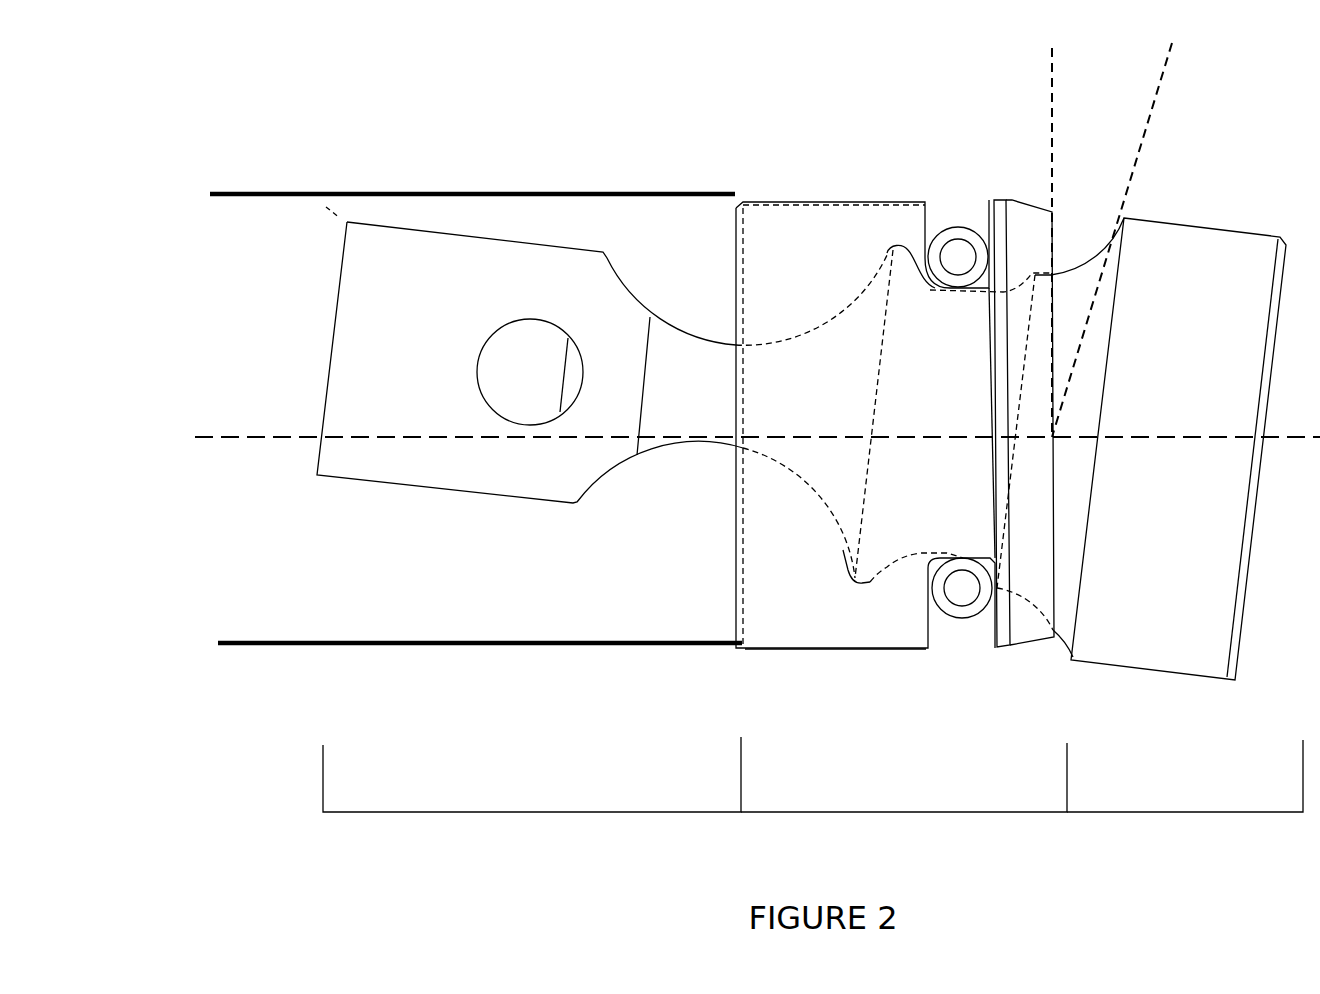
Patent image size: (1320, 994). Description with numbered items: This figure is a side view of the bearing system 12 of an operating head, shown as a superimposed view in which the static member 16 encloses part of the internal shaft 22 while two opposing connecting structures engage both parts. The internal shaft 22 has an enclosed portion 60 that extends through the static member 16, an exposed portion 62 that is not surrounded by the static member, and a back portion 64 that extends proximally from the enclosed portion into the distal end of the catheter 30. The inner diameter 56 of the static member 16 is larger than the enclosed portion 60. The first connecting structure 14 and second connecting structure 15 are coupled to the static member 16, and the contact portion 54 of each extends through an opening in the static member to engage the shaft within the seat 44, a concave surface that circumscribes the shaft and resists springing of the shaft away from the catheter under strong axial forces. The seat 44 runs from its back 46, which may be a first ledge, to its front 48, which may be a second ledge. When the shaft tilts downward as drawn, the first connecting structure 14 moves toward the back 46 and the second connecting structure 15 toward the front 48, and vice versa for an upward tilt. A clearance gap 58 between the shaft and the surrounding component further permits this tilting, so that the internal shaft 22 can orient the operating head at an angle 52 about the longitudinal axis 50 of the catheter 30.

The bearing system 12 is at (672, 135).
The first connecting structure 14 is at (955, 233).
The second connecting structure 15 is at (932, 593).
The static member 16 is at (818, 223).
The internal shaft 22 is at (550, 275).
The catheter 30 is at (425, 194).
The seat 44 is at (978, 232).
The back of the seat 46 is at (900, 245).
The front of the seat 48 is at (1003, 593).
The longitudinal axis 50 is at (757, 416).
The angle 52 is at (1051, 112).
The contact portion 54 is at (972, 555).
The inner diameter 56 is at (769, 648).
The clearance gap 58 is at (325, 208).
The enclosed portion 60 is at (904, 796).
The exposed portion 62 is at (1185, 798).
The back portion 64 is at (532, 794).